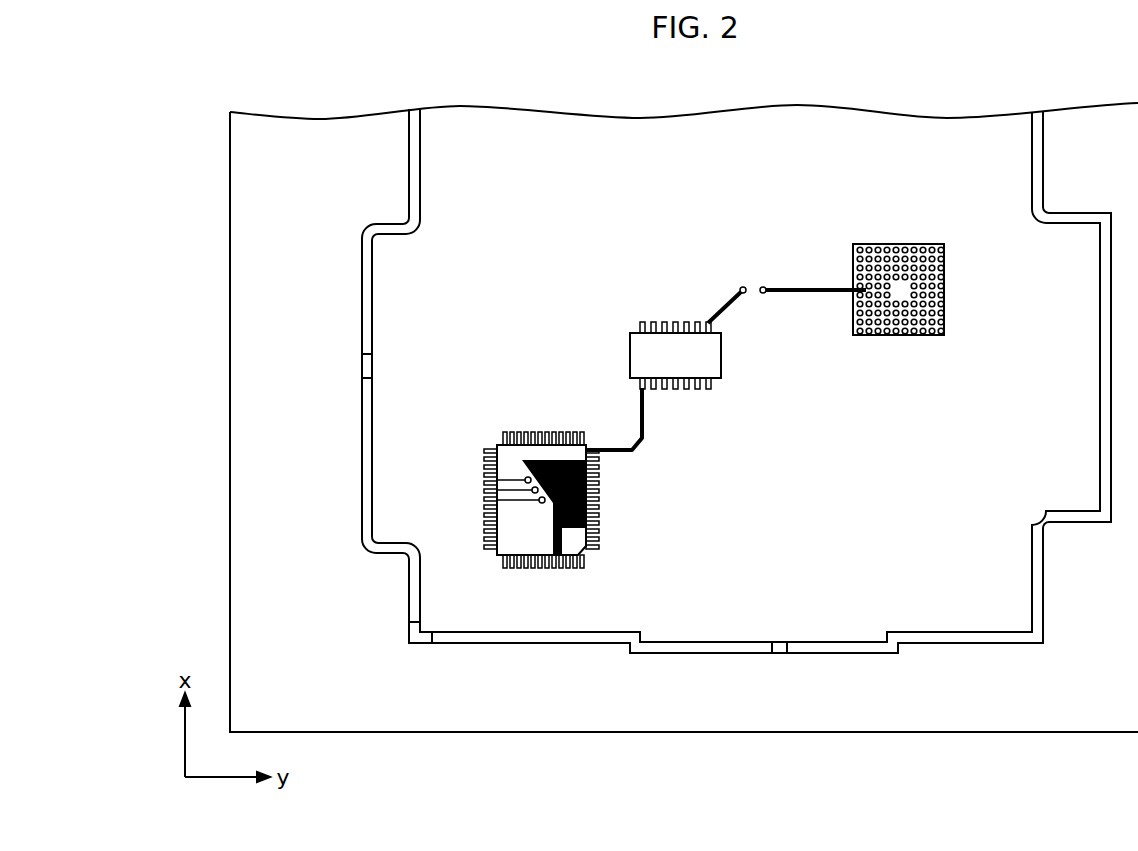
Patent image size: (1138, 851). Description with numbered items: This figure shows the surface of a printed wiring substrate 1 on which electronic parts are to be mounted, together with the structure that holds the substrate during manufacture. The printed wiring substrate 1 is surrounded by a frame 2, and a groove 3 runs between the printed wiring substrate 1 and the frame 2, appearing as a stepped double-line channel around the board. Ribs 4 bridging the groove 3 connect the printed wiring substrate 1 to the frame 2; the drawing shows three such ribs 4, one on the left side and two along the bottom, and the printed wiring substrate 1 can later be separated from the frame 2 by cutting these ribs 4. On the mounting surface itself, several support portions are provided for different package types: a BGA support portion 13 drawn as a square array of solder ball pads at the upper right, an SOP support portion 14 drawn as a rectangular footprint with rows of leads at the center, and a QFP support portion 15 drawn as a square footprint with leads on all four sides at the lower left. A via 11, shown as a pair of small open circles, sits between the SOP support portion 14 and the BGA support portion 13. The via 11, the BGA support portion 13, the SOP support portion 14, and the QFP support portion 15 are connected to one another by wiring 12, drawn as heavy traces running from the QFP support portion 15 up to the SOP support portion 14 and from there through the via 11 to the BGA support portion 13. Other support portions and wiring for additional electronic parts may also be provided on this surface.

The printed wiring substrate 1 is at (548, 138).
The frame 2 is at (318, 138).
The groove 3 is at (997, 639).
The rib 4 is at (372, 363).
The via 11 is at (743, 286).
The wiring 12 is at (645, 423).
The BGA support portion 13 is at (878, 244).
The SOP support portion 14 is at (630, 355).
The QFP support portion 15 is at (500, 444).